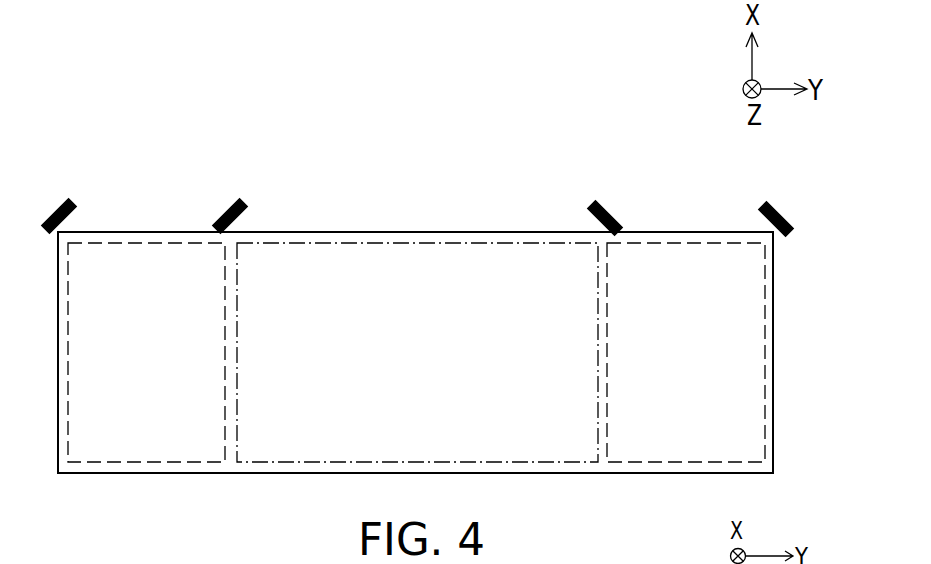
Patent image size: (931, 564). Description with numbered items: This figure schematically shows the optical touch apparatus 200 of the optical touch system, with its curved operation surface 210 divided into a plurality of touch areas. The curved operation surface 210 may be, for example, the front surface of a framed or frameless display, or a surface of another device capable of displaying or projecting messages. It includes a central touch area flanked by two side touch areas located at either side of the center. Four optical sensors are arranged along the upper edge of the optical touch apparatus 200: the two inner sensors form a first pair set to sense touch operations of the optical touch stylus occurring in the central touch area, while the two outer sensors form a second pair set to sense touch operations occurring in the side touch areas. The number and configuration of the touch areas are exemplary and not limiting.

The optical touch apparatus 200 is at (150, 140).
The curved operation surface 210 is at (135, 232).